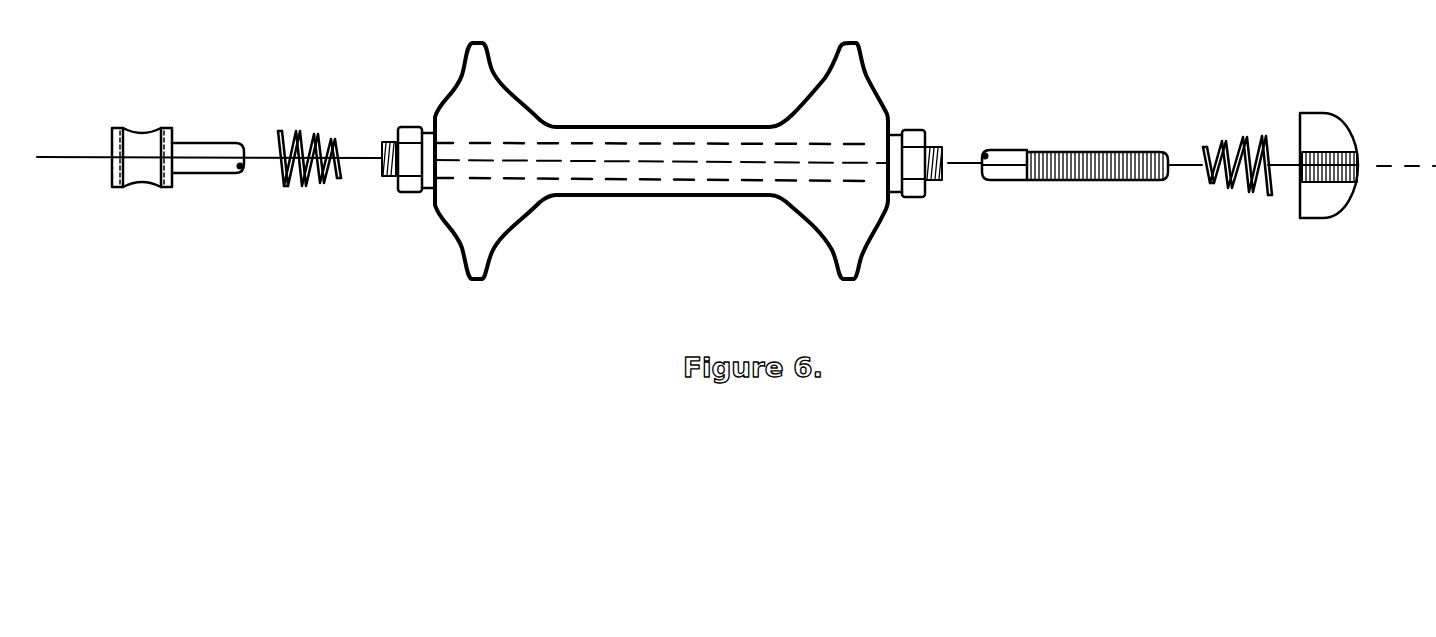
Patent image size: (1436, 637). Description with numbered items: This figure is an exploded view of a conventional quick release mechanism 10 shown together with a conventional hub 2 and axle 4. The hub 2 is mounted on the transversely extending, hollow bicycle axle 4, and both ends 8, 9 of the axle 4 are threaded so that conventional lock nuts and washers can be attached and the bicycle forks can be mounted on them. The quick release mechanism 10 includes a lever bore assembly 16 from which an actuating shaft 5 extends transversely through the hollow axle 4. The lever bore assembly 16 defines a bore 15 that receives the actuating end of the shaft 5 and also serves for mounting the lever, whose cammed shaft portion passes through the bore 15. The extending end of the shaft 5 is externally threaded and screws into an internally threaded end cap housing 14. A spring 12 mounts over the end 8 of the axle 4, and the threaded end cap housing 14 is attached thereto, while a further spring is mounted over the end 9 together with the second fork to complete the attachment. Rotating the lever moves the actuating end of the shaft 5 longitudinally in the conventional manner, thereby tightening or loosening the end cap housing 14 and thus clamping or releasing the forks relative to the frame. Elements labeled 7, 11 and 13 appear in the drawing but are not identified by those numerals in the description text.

The hub 2 is at (828, 218).
The axle 4 is at (623, 145).
The actuating shaft 5 is at (227, 178).
The threaded bolt 7 is at (1103, 150).
The threaded end of axle 8 is at (933, 147).
The threaded end of axle 9 is at (394, 166).
The quick release mechanism 10 is at (152, 188).
The threaded insert 11 is at (1305, 170).
The spring 12 is at (1230, 138).
The left spring 13 is at (306, 128).
The end cap housing 14 is at (1323, 197).
The bore 15 is at (137, 173).
The lever bore assembly 16 is at (117, 140).